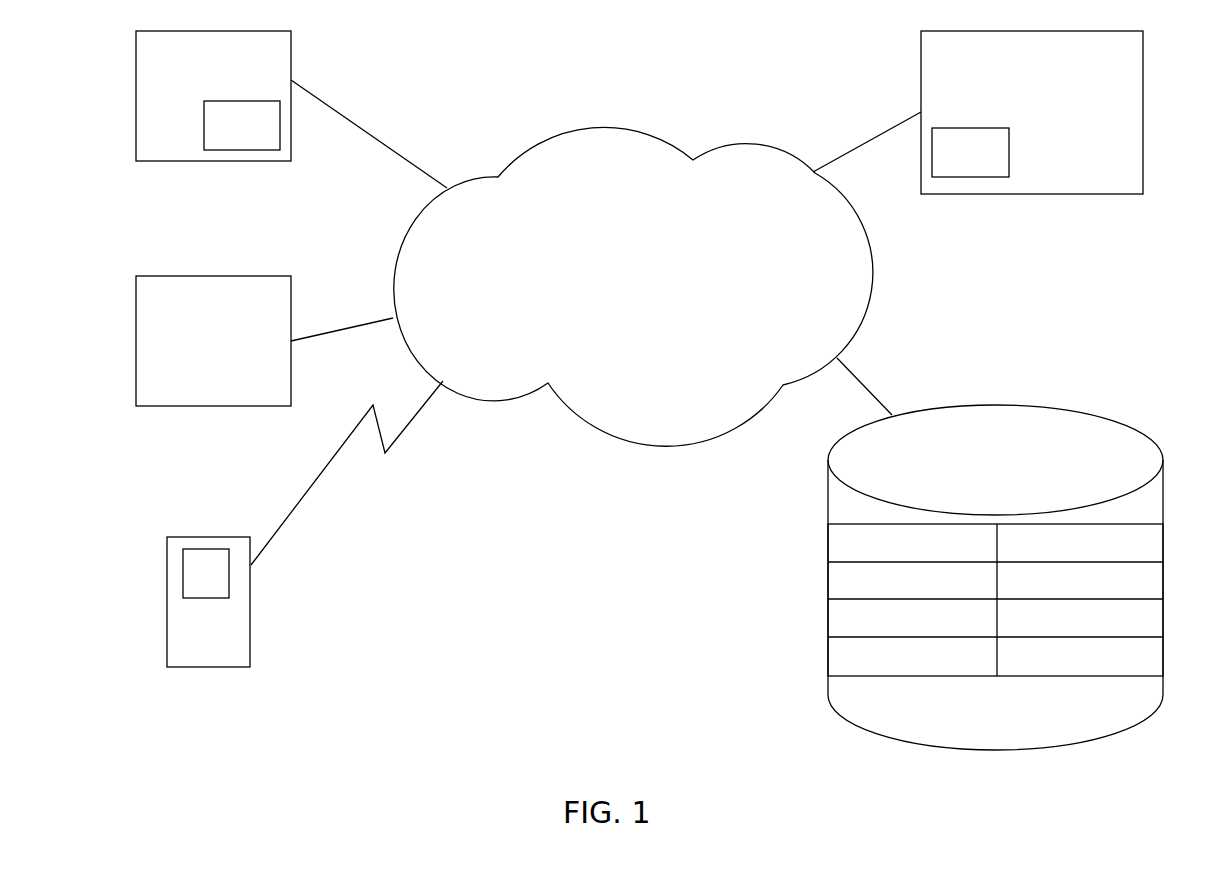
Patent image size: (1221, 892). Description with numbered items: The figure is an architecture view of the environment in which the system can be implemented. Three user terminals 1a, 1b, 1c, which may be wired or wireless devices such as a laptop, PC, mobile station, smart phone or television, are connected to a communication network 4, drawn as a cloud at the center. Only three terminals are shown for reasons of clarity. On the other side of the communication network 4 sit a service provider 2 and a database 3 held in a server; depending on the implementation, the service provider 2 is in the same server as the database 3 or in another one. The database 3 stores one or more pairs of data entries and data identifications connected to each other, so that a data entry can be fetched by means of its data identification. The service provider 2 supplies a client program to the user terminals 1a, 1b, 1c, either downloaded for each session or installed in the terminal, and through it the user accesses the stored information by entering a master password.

The user terminal 1a is at (148, 88).
The user terminal 1b is at (148, 348).
The user terminal 1c is at (178, 602).
The service provider 2 is at (1113, 103).
The database 3 is at (1110, 437).
The communication network 4 is at (538, 190).